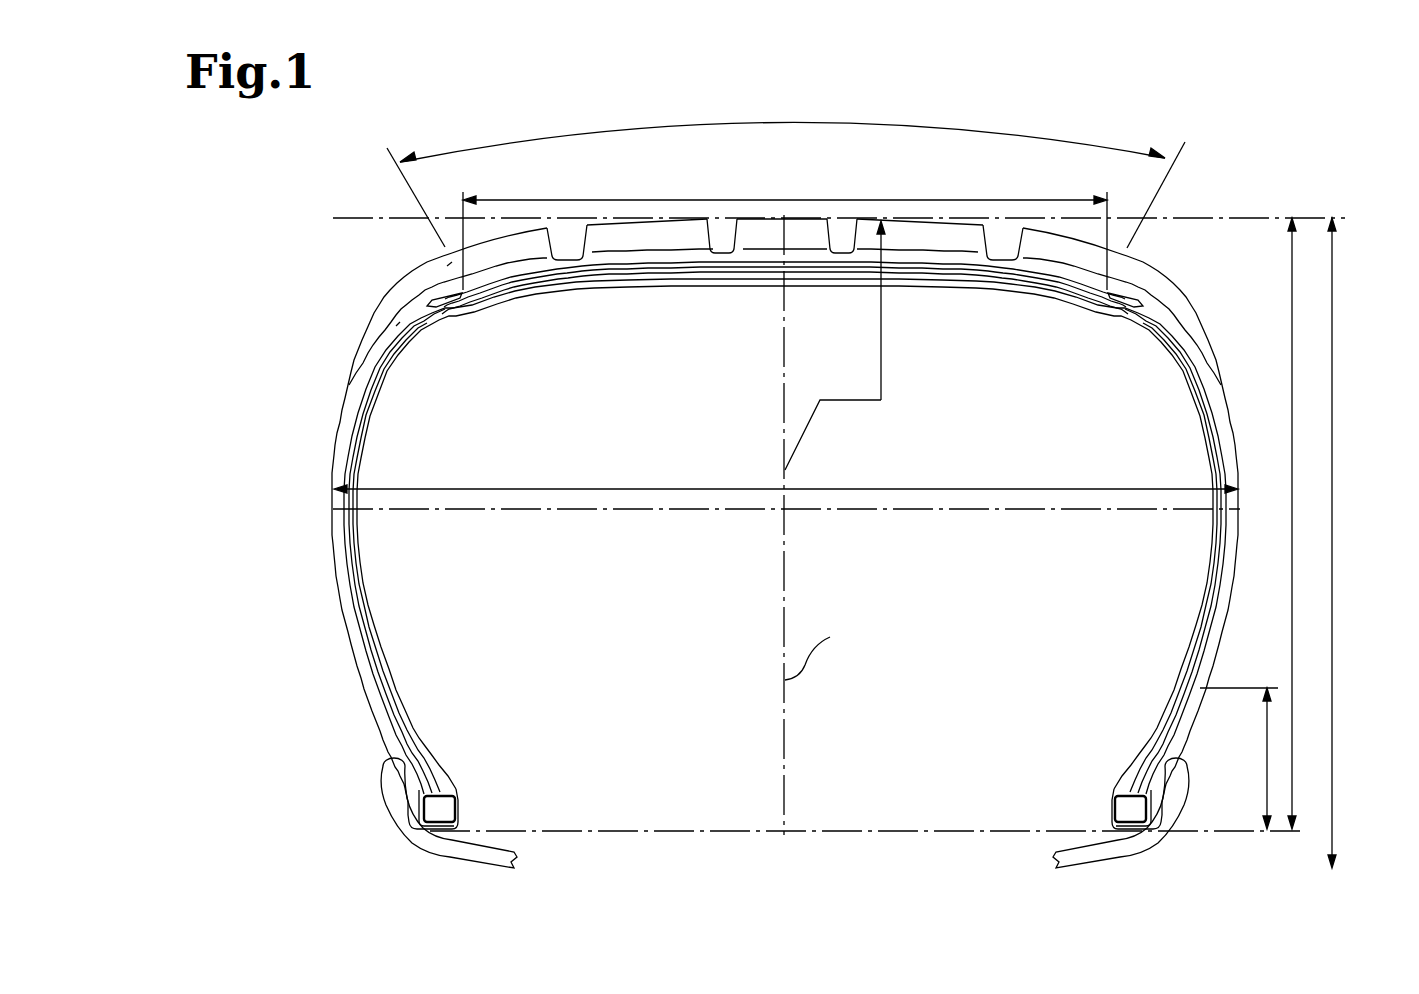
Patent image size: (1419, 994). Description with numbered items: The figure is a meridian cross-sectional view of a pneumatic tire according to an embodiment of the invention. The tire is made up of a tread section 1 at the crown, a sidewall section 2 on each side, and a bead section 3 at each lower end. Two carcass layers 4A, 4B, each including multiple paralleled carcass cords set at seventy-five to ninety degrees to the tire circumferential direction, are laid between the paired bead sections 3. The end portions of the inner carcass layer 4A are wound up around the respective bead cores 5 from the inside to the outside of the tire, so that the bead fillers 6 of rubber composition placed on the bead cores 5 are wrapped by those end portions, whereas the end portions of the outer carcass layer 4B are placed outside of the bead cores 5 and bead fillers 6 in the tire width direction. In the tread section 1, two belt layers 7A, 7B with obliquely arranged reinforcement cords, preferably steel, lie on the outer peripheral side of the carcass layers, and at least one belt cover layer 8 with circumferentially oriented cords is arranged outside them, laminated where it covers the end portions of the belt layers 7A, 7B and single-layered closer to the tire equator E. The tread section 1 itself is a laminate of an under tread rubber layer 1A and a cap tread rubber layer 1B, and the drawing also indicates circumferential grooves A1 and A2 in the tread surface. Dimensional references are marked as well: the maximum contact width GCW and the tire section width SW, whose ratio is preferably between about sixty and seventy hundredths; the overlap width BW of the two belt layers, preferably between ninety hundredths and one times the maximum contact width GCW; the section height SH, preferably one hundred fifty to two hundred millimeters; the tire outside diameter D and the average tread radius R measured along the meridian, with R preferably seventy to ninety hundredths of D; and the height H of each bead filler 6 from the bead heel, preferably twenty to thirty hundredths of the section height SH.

The tread section 1 is at (953, 228).
The under tread rubber layer 1A is at (393, 325).
The cap tread rubber layer 1B is at (432, 273).
The sidewall section 2 is at (1235, 438).
The bead section 3 is at (389, 750).
The carcass layer 4A is at (1186, 368).
The carcass layer 4B is at (1205, 362).
The bead core 5 is at (453, 810).
The bead filler 6 is at (433, 783).
The belt layer 7A is at (1020, 292).
The belt layer 7B is at (1043, 285).
The belt cover layer 8 is at (1139, 303).
The center main groove A1 is at (717, 247).
The shoulder main groove A2 is at (575, 247).
The maximum contact width GCW is at (786, 172).
The width of belt overlap portion BW is at (785, 230).
The tire section width SW is at (786, 476).
The section height SH is at (1309, 523).
The tire outside diameter D is at (1342, 543).
The height of bead filler H is at (1245, 758).
The average tread radius R is at (835, 345).
The tire equator E is at (817, 648).